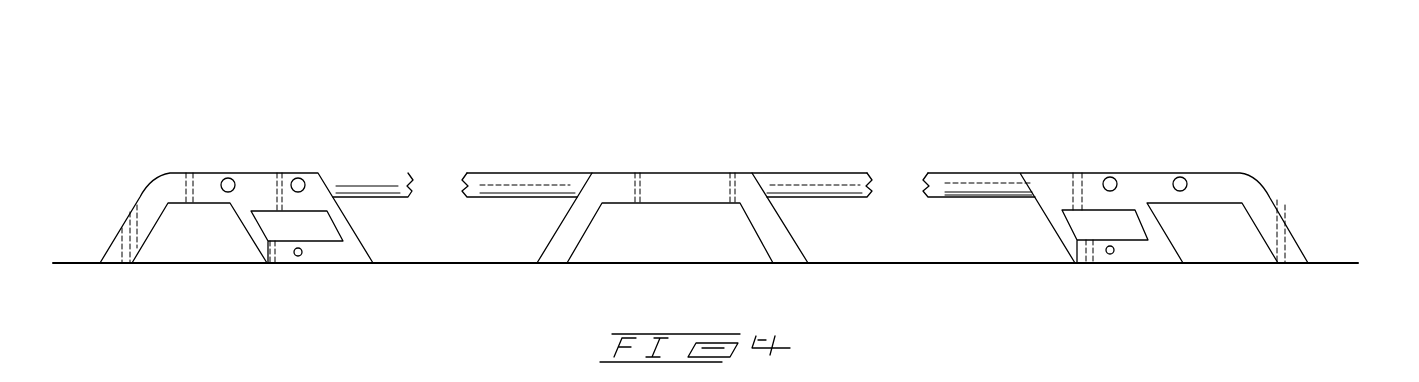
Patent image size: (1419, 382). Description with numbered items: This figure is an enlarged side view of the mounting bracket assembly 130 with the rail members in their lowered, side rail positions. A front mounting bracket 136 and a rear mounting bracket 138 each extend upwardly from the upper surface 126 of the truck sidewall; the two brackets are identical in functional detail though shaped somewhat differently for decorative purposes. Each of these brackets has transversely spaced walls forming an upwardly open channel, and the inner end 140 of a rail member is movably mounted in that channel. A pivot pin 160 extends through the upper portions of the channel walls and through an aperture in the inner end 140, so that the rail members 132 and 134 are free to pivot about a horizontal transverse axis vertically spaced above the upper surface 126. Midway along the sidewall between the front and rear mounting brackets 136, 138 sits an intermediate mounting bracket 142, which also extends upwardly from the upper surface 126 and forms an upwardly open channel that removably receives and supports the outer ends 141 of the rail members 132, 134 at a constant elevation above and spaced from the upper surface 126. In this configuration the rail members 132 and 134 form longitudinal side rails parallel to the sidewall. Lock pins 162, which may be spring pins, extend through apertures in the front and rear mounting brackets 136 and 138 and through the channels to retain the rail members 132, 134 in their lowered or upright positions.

The upper surface 126 is at (203, 265).
The mounting bracket 130 is at (578, 99).
The rail member 132 is at (375, 190).
The rail member 134 is at (973, 185).
The front mounting bracket 136 is at (141, 194).
The rear mounting bracket 138 is at (1293, 222).
The inner end 140 is at (392, 175).
The outer end 141 is at (517, 173).
The intermediate mounting bracket 142 is at (783, 238).
The pivot pin 160 is at (288, 177).
The lock pin 162 is at (222, 174).